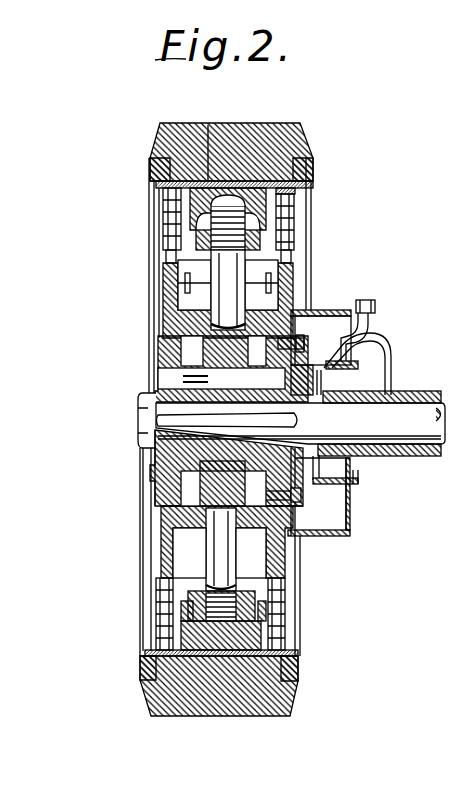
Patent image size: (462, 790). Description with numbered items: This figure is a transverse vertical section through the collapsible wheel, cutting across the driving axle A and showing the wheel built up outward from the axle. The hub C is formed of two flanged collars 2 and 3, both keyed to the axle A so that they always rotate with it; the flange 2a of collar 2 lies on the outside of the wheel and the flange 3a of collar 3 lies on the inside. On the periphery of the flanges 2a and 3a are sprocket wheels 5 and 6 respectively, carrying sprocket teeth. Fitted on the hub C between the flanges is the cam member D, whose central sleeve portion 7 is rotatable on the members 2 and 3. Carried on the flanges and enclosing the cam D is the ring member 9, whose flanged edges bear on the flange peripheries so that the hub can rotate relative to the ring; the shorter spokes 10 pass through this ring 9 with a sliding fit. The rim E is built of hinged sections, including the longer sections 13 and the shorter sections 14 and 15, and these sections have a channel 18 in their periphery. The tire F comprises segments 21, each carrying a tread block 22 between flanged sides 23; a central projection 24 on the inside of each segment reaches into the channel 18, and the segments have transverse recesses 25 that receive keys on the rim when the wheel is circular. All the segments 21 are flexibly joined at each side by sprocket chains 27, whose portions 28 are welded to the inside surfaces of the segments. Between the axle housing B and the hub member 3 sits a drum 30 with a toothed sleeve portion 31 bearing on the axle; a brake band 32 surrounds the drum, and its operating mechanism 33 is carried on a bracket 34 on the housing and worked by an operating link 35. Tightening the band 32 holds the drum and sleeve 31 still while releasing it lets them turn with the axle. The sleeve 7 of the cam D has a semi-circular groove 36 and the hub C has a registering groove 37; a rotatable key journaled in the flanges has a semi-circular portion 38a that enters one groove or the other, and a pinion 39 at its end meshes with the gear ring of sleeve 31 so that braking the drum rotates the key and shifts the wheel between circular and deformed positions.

The flanged collar 2 is at (147, 442).
The flange 2a is at (160, 485).
The flanged collar 3 is at (300, 470).
The flange 3a is at (293, 492).
The sprocket wheel 5 is at (160, 552).
The sprocket wheel 6 is at (278, 556).
The central sleeve portion 7 is at (223, 483).
The ring member 9 is at (168, 312).
The spoke 10 is at (226, 268).
The rim section 13 is at (190, 292).
The rim section 14 is at (180, 258).
The rim section 15 is at (203, 225).
The channel 18 is at (190, 205).
The tire segment 21 is at (306, 178).
The tread block 22 is at (266, 135).
The flanged side 23 is at (144, 158).
The central projection 24 is at (233, 160).
The transverse recess 25 is at (212, 655).
The sprocket chain 27 is at (160, 600).
The chain portion 28 is at (285, 186).
The drum 30 is at (345, 470).
The sleeve portion 31 is at (302, 432).
The brake band 32 is at (345, 352).
The brake band operating mechanism 33 is at (362, 314).
The bracket 34 is at (385, 360).
The operating link 35 is at (367, 294).
The groove 36 is at (175, 368).
The groove 37 is at (130, 395).
The intermediate portion 38a is at (300, 325).
The pinion 39 is at (302, 352).
The driving axle A is at (300, 423).
The axle housing B is at (404, 450).
The hub C is at (150, 452).
The cam member D is at (180, 352).
The rim E is at (200, 117).
The tire F is at (142, 150).